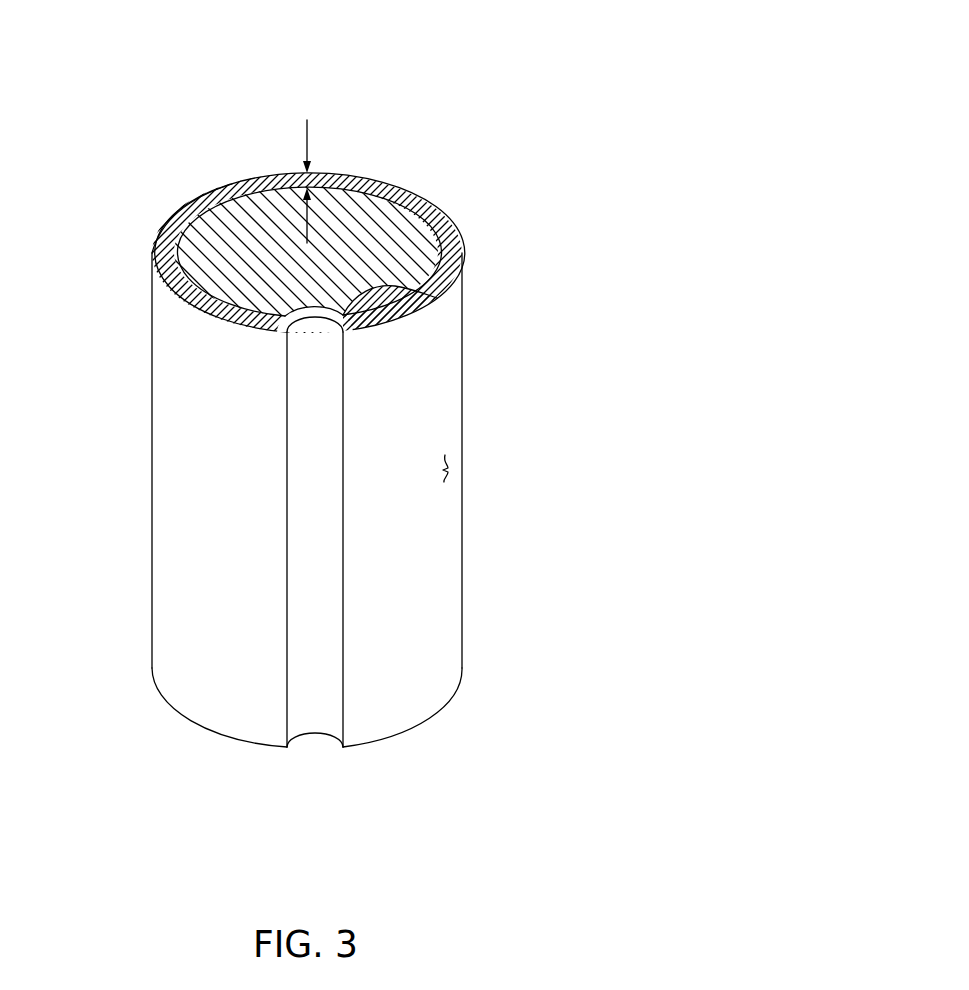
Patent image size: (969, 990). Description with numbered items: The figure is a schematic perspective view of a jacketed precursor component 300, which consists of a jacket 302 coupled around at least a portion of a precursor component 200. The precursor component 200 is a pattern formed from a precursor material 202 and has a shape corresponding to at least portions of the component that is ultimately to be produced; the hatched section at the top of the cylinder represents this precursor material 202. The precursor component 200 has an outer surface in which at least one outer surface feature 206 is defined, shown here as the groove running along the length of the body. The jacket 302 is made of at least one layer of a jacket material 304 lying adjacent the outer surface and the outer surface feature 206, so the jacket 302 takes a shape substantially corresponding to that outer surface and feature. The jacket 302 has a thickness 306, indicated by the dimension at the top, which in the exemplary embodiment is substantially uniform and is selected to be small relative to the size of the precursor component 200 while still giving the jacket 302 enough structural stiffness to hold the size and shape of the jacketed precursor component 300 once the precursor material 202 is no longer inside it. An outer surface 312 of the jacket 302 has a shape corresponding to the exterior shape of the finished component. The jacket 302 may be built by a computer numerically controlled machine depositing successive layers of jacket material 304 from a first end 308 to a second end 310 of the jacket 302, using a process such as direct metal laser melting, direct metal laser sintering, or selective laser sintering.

The precursor component 200 is at (410, 237).
The precursor material 202 is at (405, 270).
The outer surface feature 206 is at (437, 298).
The jacketed precursor component 300 is at (328, 407).
The jacket 302 is at (400, 188).
The jacket material 304 is at (445, 383).
The thickness 306 is at (307, 138).
The first end 308 is at (192, 743).
The second end 310 is at (175, 185).
The outer surface 312 is at (450, 470).